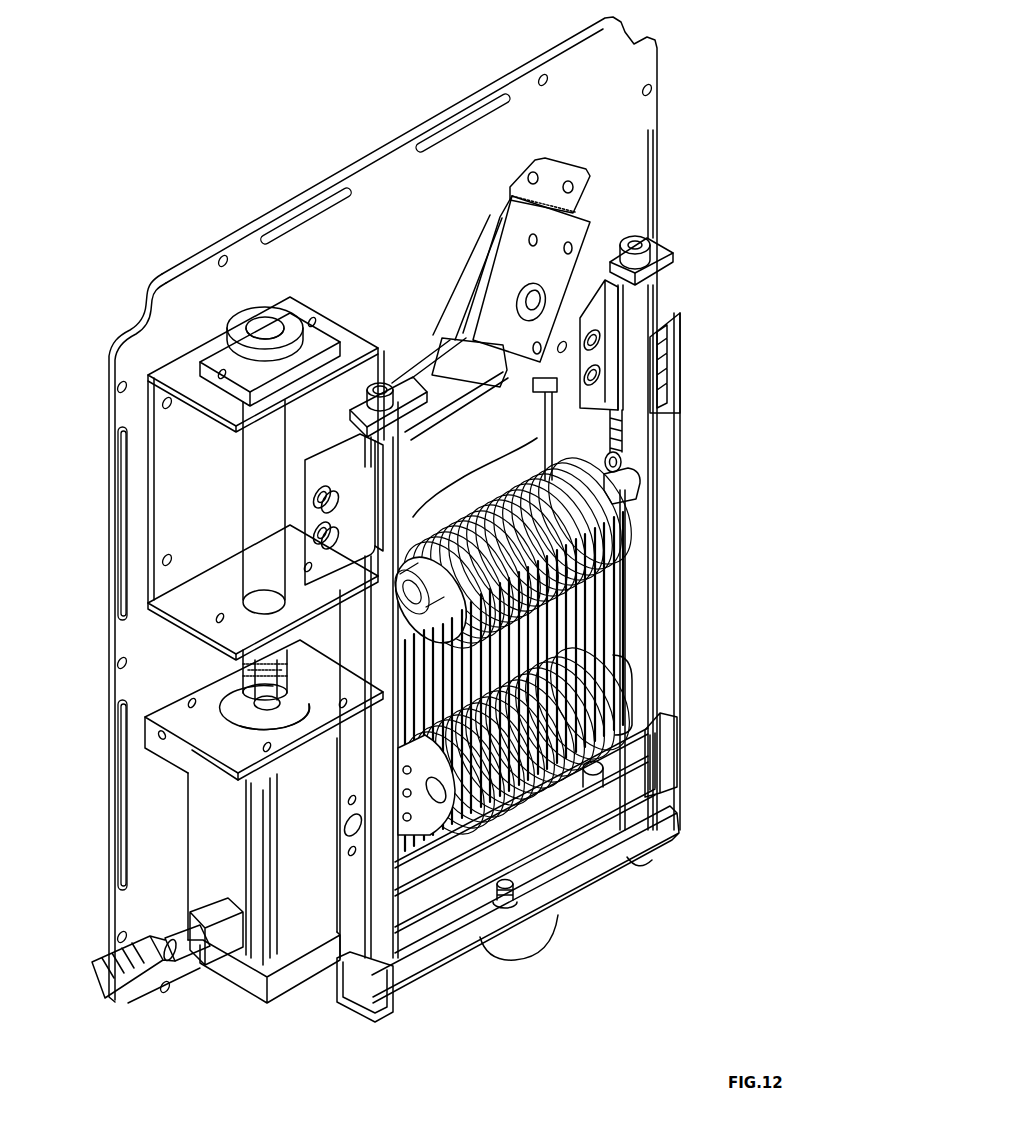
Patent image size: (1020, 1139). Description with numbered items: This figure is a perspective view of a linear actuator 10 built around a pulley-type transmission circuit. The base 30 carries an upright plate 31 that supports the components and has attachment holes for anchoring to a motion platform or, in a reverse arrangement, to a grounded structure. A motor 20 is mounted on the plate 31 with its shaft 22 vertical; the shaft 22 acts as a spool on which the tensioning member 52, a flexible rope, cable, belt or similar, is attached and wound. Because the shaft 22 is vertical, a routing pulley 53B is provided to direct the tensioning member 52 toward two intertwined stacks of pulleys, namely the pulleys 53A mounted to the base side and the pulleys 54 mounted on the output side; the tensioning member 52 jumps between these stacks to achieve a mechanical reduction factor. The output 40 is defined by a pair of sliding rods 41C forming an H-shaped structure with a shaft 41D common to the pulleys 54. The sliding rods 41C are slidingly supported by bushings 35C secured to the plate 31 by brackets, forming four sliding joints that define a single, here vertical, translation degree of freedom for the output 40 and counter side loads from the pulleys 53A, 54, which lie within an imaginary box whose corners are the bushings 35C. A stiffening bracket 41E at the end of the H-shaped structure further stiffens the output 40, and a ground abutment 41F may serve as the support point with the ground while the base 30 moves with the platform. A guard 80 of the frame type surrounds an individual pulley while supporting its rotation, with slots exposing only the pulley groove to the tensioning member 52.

The linear actuator 10 is at (252, 126).
The motor 20 is at (318, 862).
The shaft 22 is at (257, 703).
The base 30 is at (667, 162).
The plate 31 is at (372, 259).
The bushings 35C is at (677, 340).
The output 40 is at (638, 413).
The sliding rods 41C is at (633, 590).
The shaft 41D is at (620, 485).
The stiffening bracket 41E is at (600, 863).
The ground abutment 41F is at (525, 952).
The tensioning member 52 is at (426, 345).
The pulleys 53A is at (521, 775).
The routing pulley 53B is at (462, 322).
The pulleys 54 is at (514, 637).
The guard 80 is at (468, 333).